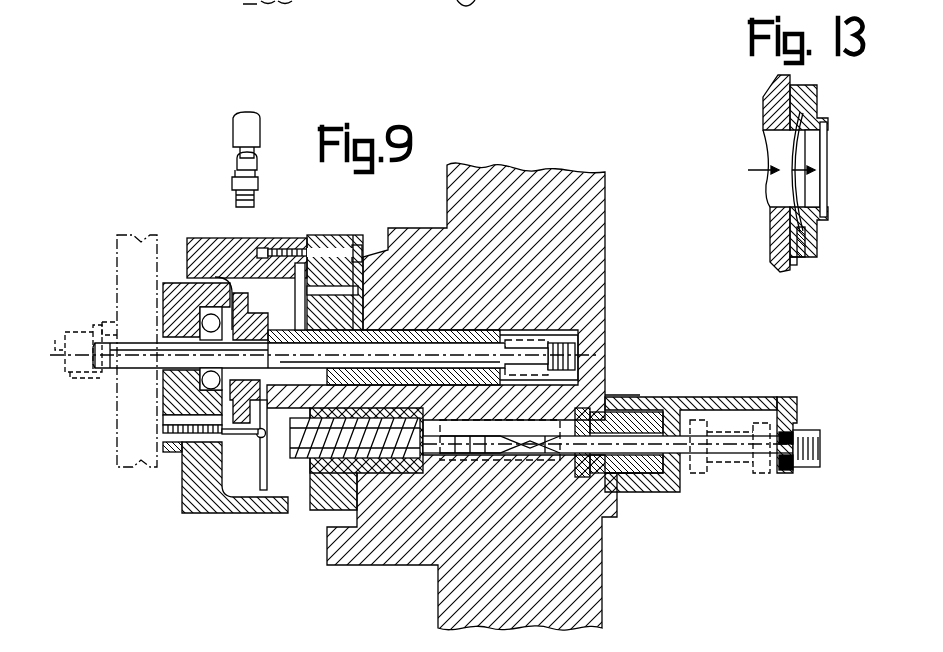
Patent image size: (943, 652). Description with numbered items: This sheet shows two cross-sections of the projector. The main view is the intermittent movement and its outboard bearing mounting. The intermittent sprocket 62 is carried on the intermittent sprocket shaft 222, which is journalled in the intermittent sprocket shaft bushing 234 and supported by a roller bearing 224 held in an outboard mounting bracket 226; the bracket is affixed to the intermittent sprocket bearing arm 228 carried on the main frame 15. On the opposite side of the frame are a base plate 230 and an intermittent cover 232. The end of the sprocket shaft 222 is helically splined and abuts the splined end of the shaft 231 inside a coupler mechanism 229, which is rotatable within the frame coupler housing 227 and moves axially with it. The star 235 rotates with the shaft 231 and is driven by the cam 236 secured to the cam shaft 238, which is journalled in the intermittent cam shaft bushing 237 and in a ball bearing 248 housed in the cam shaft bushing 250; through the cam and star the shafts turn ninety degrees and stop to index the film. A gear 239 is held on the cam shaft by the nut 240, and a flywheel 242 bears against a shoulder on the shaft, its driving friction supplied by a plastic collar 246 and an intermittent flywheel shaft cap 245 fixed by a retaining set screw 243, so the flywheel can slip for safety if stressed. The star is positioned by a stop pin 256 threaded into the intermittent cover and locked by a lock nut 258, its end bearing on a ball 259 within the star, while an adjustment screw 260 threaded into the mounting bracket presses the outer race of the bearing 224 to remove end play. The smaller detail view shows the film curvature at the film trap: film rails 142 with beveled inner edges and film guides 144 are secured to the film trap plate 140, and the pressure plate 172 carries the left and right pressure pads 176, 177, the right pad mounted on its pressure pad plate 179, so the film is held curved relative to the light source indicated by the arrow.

In FIG. 9, the main frame 15 is at (517, 187).
In FIG. 9, the intermittent sprocket 62 is at (757, 473).
In FIG. 13, the film trap plate 140 is at (770, 92).
In FIG. 13, the film rails 142 is at (797, 262).
In FIG. 13, the film guides 144 is at (803, 257).
In FIG. 13, the pressure plate 172 is at (807, 243).
In FIG. 13, the left pressure pad 176 is at (808, 203).
In FIG. 13, the right pressure pad 177 is at (807, 125).
In FIG. 13, the pressure pad plate 179 is at (823, 150).
In FIG. 9, the intermittent sprocket shaft 222 is at (712, 440).
In FIG. 9, the roller bearing 224 is at (787, 460).
In FIG. 9, the outboard mounting bracket 226 is at (787, 403).
In FIG. 9, the frame coupler housing 227 is at (563, 450).
In FIG. 9, the intermittent sprocket bearing arm 228 is at (615, 515).
In FIG. 9, the coupler mechanism 229 is at (463, 452).
In FIG. 9, the base plate 230 is at (323, 236).
In FIG. 9, the shaft 231 is at (335, 458).
In FIG. 9, the intermittent cover 232 is at (213, 517).
In FIG. 9, the intermittent sprocket shaft bushing 234 is at (630, 395).
In FIG. 9, the star 235 is at (263, 490).
In FIG. 9, the cam 236 is at (244, 301).
In FIG. 9, the intermittent cam shaft bushing 237 is at (408, 330).
In FIG. 9, the cam shaft 238 is at (150, 368).
In FIG. 9, the gear 239 is at (525, 343).
In FIG. 9, the nut 240 is at (557, 345).
In FIG. 9, the flywheel 242 is at (147, 240).
In FIG. 9, the retaining set screw 243 is at (55, 343).
In FIG. 9, the intermittent flywheel shaft cap 245 is at (72, 372).
In FIG. 9, the plastic collar 246 is at (95, 377).
In FIG. 9, the ball bearing 248 is at (213, 315).
In FIG. 9, the cam shaft bushing 250 is at (167, 315).
In FIG. 9, the stop pin 256 is at (165, 448).
In FIG. 9, the lock nut 258 is at (175, 450).
In FIG. 9, the ball 259 is at (256, 437).
In FIG. 9, the adjustment screw 260 is at (820, 437).